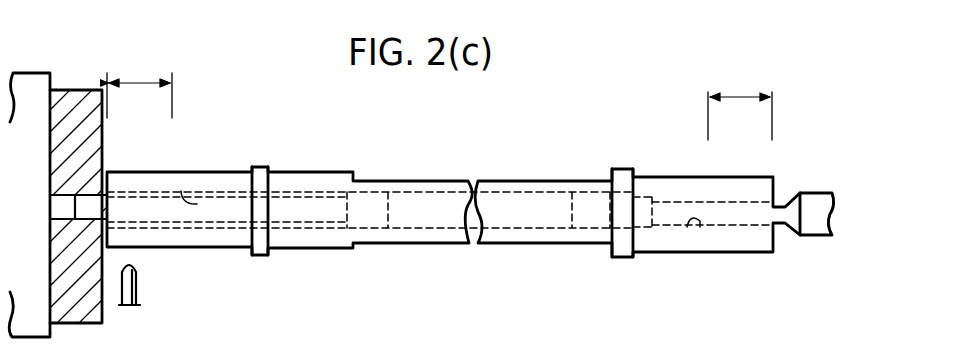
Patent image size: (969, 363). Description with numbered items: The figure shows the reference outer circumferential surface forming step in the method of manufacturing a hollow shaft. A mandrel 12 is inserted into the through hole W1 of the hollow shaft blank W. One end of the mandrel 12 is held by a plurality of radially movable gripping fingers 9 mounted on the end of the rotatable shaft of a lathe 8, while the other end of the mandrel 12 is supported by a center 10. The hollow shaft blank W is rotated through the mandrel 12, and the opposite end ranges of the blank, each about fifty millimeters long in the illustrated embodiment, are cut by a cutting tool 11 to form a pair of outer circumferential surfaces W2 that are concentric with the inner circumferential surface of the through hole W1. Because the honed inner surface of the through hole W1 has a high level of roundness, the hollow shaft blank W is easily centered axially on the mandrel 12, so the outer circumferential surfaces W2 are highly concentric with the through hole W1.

The lathe 8 is at (30, 93).
The gripping fingers 9 is at (77, 105).
The center 10 is at (815, 207).
The cutting tool 11 is at (137, 288).
The mandrel 12 is at (88, 205).
The hollow shaft blank W is at (670, 177).
The through hole W1 is at (197, 203).
The outer circumferential surfaces W2 is at (145, 170).